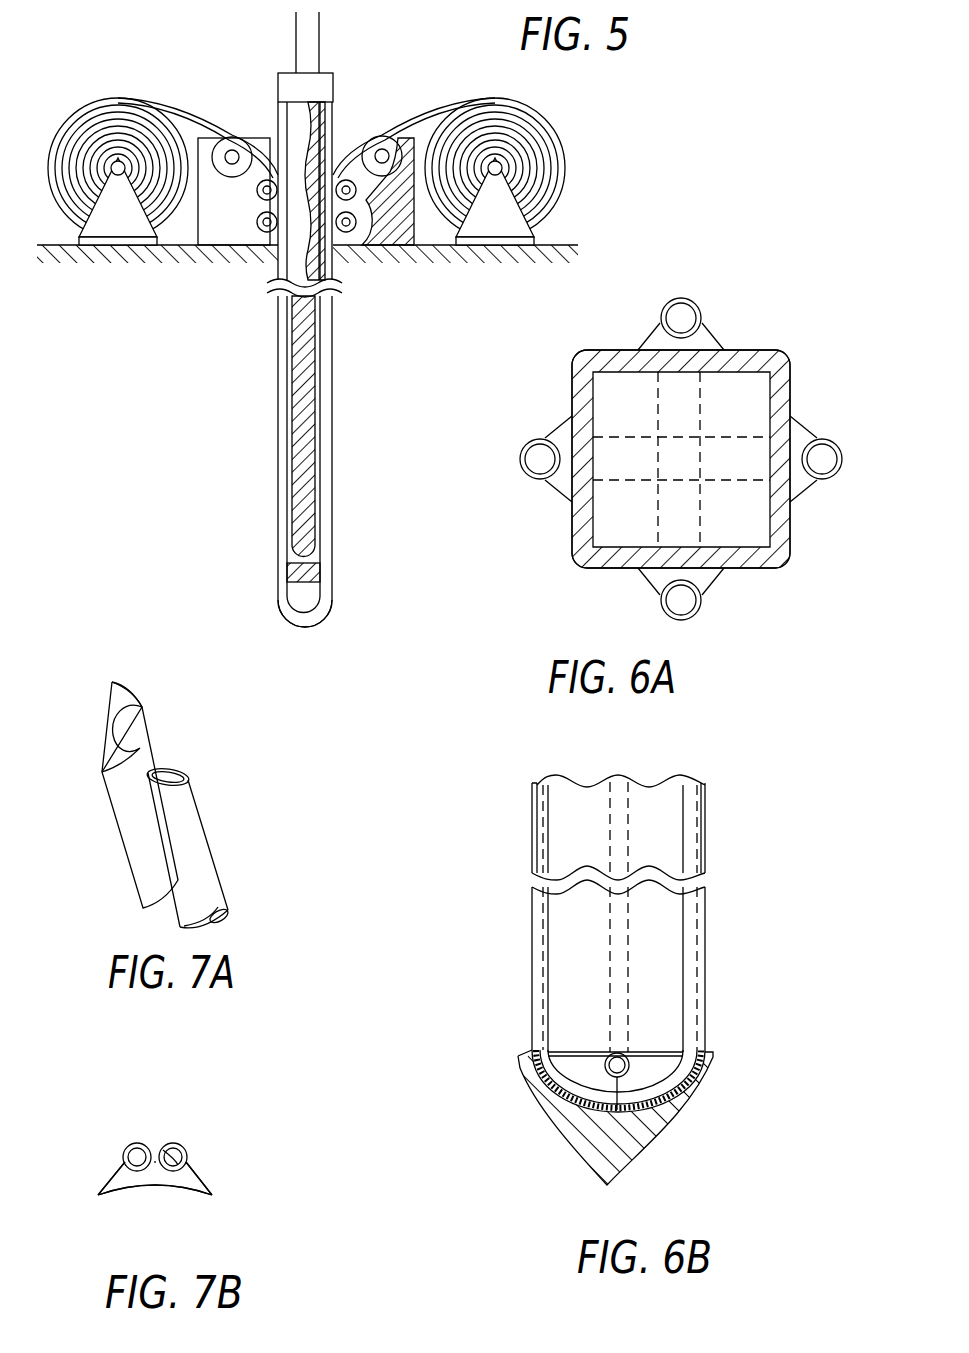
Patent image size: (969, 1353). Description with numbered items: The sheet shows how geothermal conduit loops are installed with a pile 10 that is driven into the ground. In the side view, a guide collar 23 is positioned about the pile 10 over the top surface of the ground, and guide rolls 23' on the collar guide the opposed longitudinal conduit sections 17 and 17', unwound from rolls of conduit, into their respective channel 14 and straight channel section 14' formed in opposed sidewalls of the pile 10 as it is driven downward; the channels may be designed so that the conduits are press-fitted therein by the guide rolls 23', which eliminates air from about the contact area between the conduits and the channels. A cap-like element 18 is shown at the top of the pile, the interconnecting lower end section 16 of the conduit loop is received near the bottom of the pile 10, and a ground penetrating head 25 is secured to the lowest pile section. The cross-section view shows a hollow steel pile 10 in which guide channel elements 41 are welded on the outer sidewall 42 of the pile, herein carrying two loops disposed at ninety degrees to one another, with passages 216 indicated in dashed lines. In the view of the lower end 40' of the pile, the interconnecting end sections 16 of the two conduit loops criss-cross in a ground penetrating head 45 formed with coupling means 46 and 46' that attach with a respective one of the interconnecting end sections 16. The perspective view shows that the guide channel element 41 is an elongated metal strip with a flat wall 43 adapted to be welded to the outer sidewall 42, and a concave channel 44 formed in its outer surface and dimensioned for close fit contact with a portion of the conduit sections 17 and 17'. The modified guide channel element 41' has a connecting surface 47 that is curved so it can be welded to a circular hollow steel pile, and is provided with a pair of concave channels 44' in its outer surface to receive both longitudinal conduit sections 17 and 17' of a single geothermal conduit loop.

In FIG. 5, the pile 10 is at (266, 375).
In FIG. 6A, the pile 10 is at (754, 275).
In FIG. 5, the channel 14 is at (330, 120).
In FIG. 5, the straight channel section 14' is at (275, 336).
In FIG. 5, the interconnecting lower end section 16 is at (295, 566).
In FIG. 5, the longitudinal conduit section 17 is at (445, 100).
In FIG. 6A, the longitudinal conduit section 17 is at (672, 302).
In FIG. 7A, the longitudinal conduit section 17 is at (192, 860).
In FIG. 7B, the longitudinal conduit section 17 is at (173, 1143).
In FIG. 5, the longitudinal conduit section 17' is at (163, 131).
In FIG. 6A, the longitudinal conduit section 17' is at (626, 522).
In FIG. 7B, the longitudinal conduit section 17' is at (121, 1122).
In FIG. 5, the cap 18 is at (318, 92).
In FIG. 5, the guide collar 23 is at (222, 215).
In FIG. 5, the guide rolls 23' is at (344, 203).
In FIG. 5, the ground penetrating head 25 is at (322, 605).
In FIG. 6B, the lower end of the pile 40' is at (666, 943).
In FIG. 6A, the guide channel element 41 is at (800, 430).
In FIG. 7A, the guide channel element 41 is at (110, 836).
In FIG. 7B, the guide channel element 41' is at (210, 1178).
In FIG. 6A, the outer sidewall 42 is at (790, 395).
In FIG. 7A, the flat wall 43 is at (103, 735).
In FIG. 7A, the concave channel 44 is at (140, 730).
In FIG. 7B, the concave channels 44' is at (221, 1142).
In FIG. 6B, the ground penetrating head 45 is at (617, 1148).
In FIG. 6B, the coupling means 46 is at (672, 1128).
In FIG. 6B, the coupling means 46' is at (697, 1046).
In FIG. 7B, the connecting surface 47 is at (153, 1184).
In FIG. 6A, the passages 216 is at (613, 488).